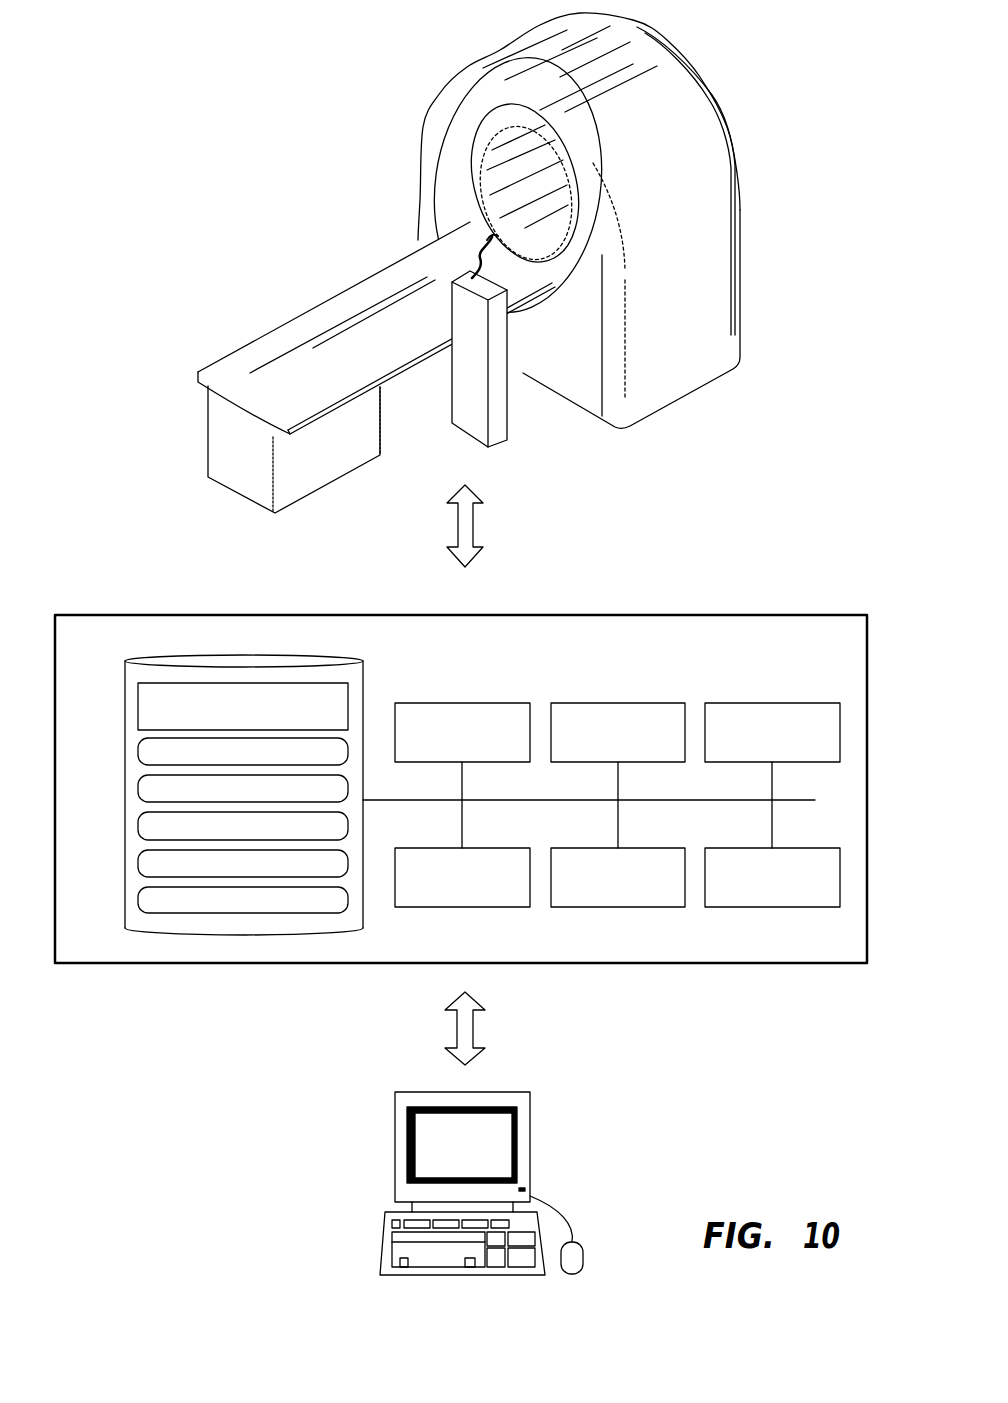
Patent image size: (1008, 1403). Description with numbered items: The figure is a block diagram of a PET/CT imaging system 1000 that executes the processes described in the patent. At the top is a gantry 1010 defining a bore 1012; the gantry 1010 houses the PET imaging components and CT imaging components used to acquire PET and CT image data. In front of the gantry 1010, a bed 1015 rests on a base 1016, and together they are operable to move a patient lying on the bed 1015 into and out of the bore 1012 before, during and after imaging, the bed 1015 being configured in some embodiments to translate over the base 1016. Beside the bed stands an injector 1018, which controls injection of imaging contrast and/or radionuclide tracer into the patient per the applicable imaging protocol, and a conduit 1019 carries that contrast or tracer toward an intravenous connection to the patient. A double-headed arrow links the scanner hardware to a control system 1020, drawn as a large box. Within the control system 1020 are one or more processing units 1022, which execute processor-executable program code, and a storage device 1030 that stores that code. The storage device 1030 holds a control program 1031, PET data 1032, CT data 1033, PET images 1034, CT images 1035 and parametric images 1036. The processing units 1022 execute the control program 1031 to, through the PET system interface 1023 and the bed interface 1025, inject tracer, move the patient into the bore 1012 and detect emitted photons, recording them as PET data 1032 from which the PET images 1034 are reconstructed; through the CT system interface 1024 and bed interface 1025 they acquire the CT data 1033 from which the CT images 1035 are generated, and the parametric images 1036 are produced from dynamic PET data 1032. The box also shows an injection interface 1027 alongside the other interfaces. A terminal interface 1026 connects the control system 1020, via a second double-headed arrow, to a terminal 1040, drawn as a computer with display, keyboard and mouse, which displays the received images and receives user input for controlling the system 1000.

The PET/CT imaging system 1000 is at (303, 37).
The gantry 1010 is at (493, 62).
The bore 1012 is at (490, 193).
The bed 1015 is at (288, 318).
The base 1016 is at (372, 427).
The injector 1018 is at (497, 363).
The conduit 1019 is at (478, 250).
The control system 1020 is at (845, 651).
The processing units 1022 is at (499, 847).
The PET system interface 1023 is at (490, 703).
The CT system interface 1024 is at (643, 703).
The bed interface 1025 is at (796, 703).
The terminal interface 1026 is at (652, 847).
The injection interface 1027 is at (799, 847).
The storage device 1030 is at (295, 663).
The control program 1031 is at (137, 706).
The PET data 1032 is at (138, 752).
The CT data 1033 is at (138, 788).
The PET images 1034 is at (138, 826).
The CT images 1035 is at (138, 863).
The parametric images 1036 is at (138, 900).
The terminal 1040 is at (579, 1142).